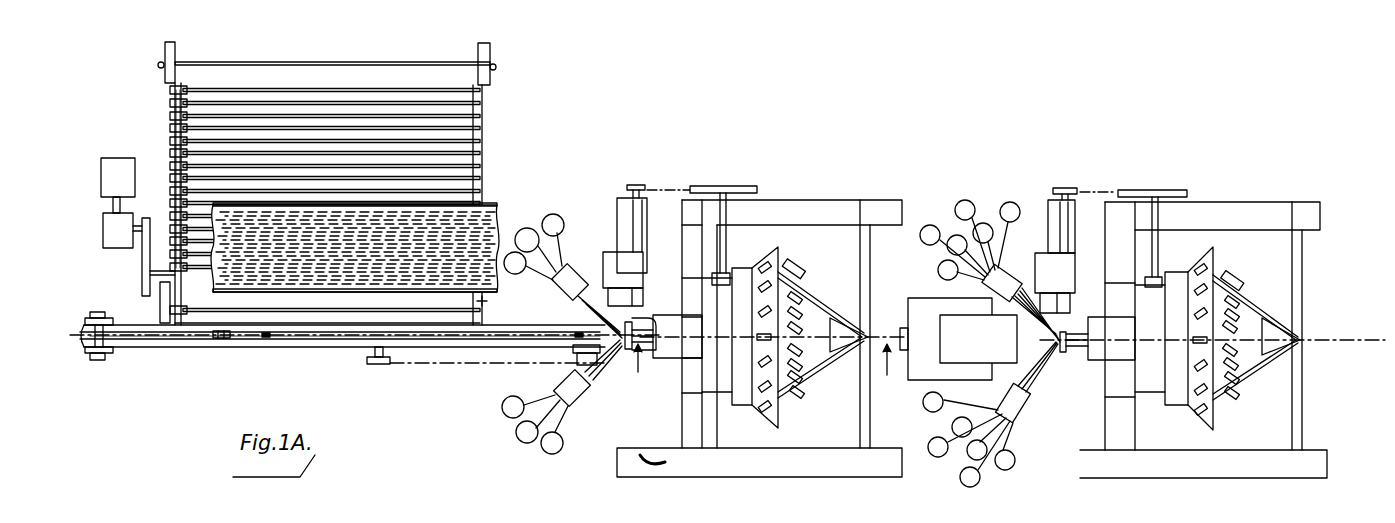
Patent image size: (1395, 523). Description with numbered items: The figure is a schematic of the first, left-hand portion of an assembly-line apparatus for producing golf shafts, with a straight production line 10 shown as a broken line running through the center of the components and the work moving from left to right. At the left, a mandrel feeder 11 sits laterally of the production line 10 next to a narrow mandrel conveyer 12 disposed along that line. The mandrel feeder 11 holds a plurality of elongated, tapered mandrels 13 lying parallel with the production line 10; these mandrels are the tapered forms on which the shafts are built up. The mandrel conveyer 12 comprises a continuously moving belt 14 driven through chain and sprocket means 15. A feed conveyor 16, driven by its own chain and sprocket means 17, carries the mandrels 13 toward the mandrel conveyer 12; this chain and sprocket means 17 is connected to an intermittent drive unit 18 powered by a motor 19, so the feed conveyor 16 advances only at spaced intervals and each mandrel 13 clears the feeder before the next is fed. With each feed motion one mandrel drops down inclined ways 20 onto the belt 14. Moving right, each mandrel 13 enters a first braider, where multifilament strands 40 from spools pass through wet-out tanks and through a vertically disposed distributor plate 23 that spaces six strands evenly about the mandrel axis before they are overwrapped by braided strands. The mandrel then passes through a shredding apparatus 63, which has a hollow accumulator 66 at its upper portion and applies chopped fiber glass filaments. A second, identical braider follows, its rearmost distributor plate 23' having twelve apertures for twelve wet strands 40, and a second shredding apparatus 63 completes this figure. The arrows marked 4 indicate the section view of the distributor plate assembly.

The production line 10 is at (896, 334).
The mandrel feeder 11 is at (487, 104).
The mandrel conveyer 12 is at (228, 345).
The mandrels 13 is at (354, 140).
The belt 14 is at (150, 333).
The chain and sprocket means 15 is at (426, 366).
The feed conveyor 16 is at (185, 78).
The chain and sprocket means 17 is at (142, 285).
The intermittent drive unit 18 is at (120, 250).
The motor 19 is at (118, 165).
The inclined ways 20 is at (170, 297).
The distributor plate 23 is at (652, 271).
The rearmost distributor plate 23' is at (1085, 290).
The section direction 4 is at (765, 372).
The multifilament strands 40 is at (998, 237).
The shredding apparatus 63 is at (912, 298).
The accumulator 66 is at (938, 369).